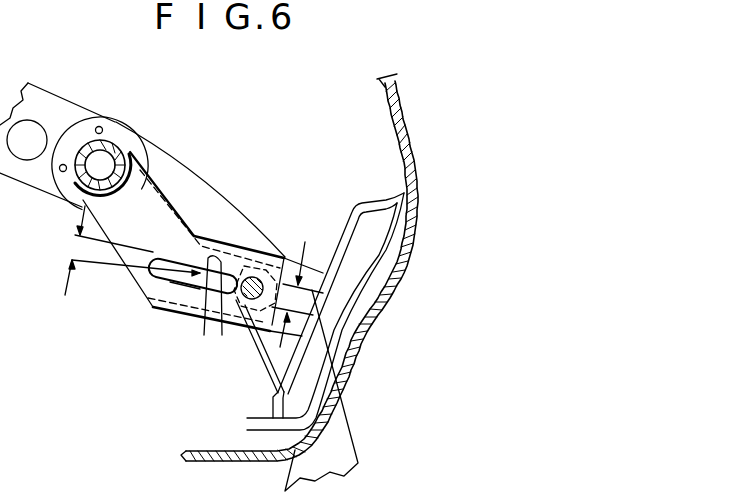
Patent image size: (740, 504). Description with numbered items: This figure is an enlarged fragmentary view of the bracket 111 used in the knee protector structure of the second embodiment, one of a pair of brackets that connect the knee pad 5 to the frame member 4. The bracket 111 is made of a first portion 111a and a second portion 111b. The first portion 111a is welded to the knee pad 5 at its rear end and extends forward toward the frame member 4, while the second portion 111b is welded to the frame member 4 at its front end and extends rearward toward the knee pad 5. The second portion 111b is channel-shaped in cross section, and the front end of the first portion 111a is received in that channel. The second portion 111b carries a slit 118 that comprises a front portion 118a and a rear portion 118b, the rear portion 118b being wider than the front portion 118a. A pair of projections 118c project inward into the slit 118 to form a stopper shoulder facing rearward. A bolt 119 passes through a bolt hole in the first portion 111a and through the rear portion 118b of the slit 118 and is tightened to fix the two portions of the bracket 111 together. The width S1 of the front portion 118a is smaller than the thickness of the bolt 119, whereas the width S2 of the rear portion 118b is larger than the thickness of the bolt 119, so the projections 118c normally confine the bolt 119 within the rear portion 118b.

The frame member 4 is at (108, 142).
The knee pad 5 is at (366, 332).
The bracket 111 is at (143, 308).
The first portion 111a is at (330, 262).
The second portion 111b is at (172, 199).
The slit 118 is at (137, 272).
The front portion 118a is at (172, 288).
The rear portion 118b is at (232, 330).
The projections 118c is at (215, 318).
The bolt 119 is at (252, 277).
The width of the front portion S1 is at (121, 250).
The width of the rear portion S2 is at (297, 283).